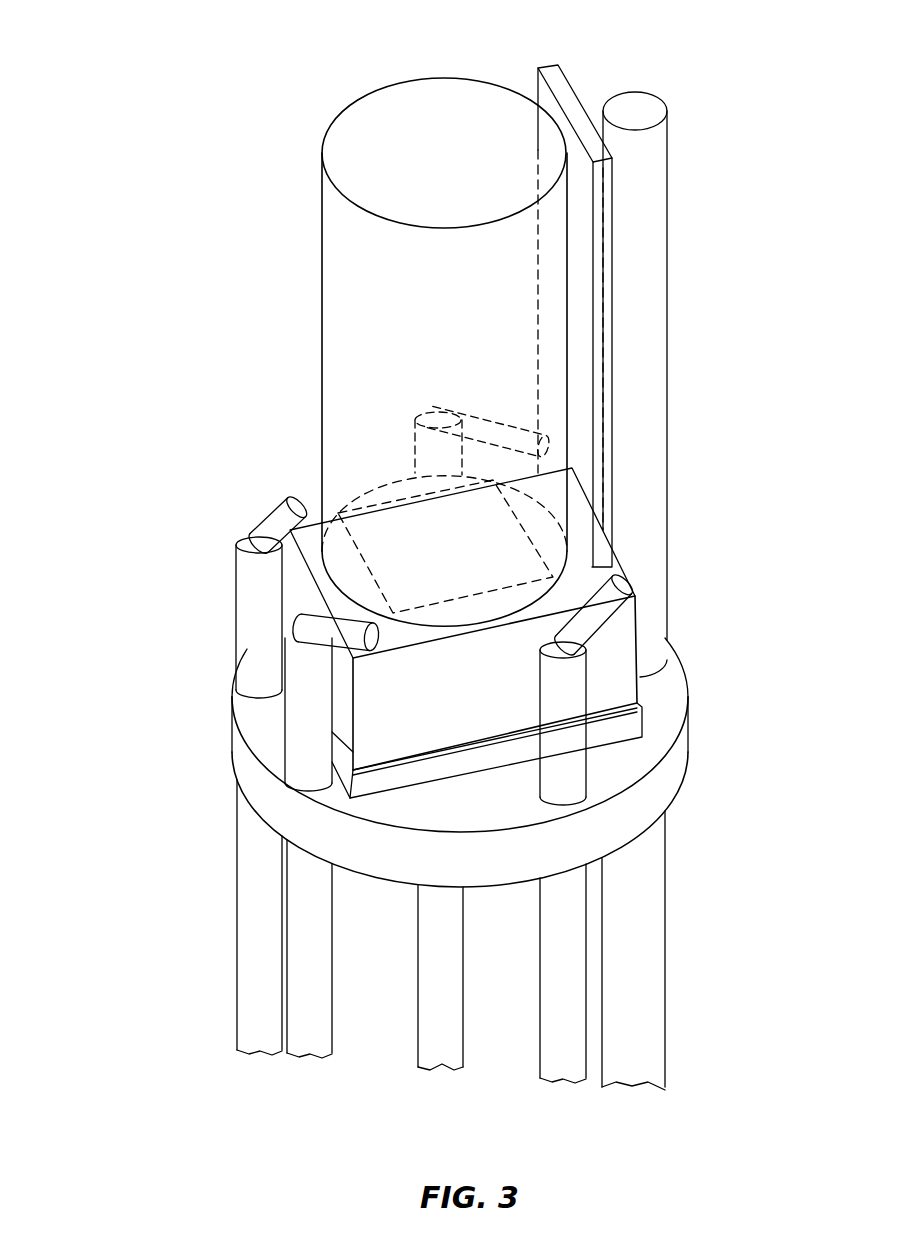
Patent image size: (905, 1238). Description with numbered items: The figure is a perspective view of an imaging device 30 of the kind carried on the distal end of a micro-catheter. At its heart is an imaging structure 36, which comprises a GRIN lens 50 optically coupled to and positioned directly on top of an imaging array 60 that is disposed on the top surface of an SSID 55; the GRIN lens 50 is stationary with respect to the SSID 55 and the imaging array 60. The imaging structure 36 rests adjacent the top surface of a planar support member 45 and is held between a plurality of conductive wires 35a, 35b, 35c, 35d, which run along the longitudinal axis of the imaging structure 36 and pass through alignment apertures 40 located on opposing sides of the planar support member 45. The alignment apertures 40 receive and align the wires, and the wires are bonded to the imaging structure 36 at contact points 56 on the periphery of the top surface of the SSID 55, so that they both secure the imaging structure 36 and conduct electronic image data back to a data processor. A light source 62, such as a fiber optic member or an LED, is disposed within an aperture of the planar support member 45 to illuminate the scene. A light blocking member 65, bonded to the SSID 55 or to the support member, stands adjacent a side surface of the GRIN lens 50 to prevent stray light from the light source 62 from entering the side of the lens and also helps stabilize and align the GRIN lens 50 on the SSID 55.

The imaging device 30 is at (150, 208).
The GRIN lens 50 is at (321, 183).
The light blocking member 65 is at (569, 93).
The light source 62 is at (650, 282).
The imaging structure 36 is at (320, 330).
The conductive wire 35a is at (565, 735).
The conductive wire 35b is at (415, 448).
The conductive wire 35c is at (305, 960).
The conductive wire 35d is at (245, 608).
The contact points 56 is at (283, 500).
The imaging array 60 is at (480, 535).
The SSID 55 is at (612, 656).
The planar support member 45 is at (243, 708).
The alignment apertures 40 is at (283, 772).